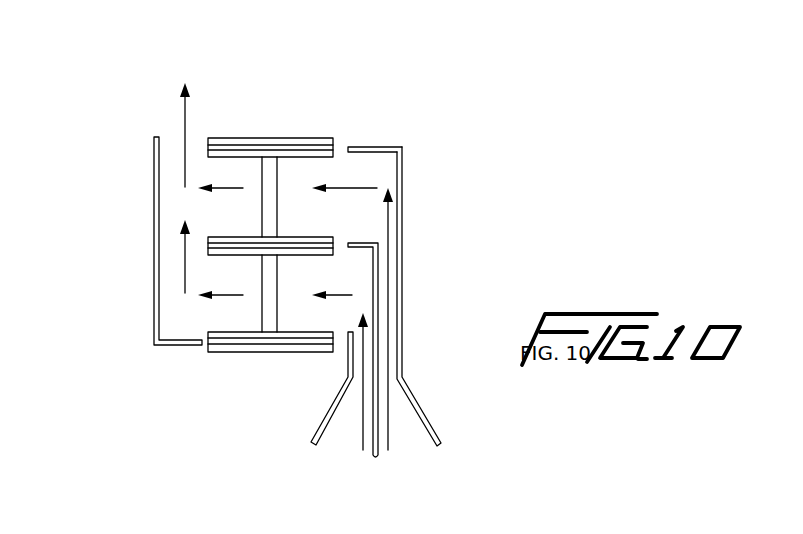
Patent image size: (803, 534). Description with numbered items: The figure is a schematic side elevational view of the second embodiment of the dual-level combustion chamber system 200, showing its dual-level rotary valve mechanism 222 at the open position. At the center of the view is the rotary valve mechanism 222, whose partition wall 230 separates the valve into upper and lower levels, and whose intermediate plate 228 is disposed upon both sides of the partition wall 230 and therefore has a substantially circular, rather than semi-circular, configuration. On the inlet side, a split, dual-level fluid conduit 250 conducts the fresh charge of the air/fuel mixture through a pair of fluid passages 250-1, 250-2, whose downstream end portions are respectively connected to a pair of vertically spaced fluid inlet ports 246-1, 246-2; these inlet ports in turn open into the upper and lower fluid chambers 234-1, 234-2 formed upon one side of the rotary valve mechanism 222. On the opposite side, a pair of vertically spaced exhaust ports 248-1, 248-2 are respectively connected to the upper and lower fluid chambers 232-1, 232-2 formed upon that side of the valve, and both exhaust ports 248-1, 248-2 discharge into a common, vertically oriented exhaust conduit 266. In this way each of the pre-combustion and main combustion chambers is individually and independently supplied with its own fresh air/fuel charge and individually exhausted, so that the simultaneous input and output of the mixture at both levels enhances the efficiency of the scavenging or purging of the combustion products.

The dual-level combustion chamber system 200 is at (380, 96).
The rotary valve mechanism 222 is at (225, 190).
The intermediate plate 228 is at (292, 253).
The partition wall 230 is at (268, 176).
The upper fluid chamber 232-1 is at (238, 203).
The lower fluid chamber 232-2 is at (238, 277).
The upper fluid chamber 234-1 is at (293, 176).
The lower fluid chamber 234-2 is at (290, 282).
The fluid inlet port 246-1 is at (340, 170).
The fluid inlet port 246-2 is at (328, 308).
The exhaust port 248-1 is at (205, 173).
The exhaust port 248-2 is at (200, 297).
The split, dual-level fluid conduit 250 is at (372, 274).
The fluid passage 250-1 is at (395, 262).
The fluid passage 250-2 is at (367, 358).
The exhaust conduit 266 is at (172, 190).